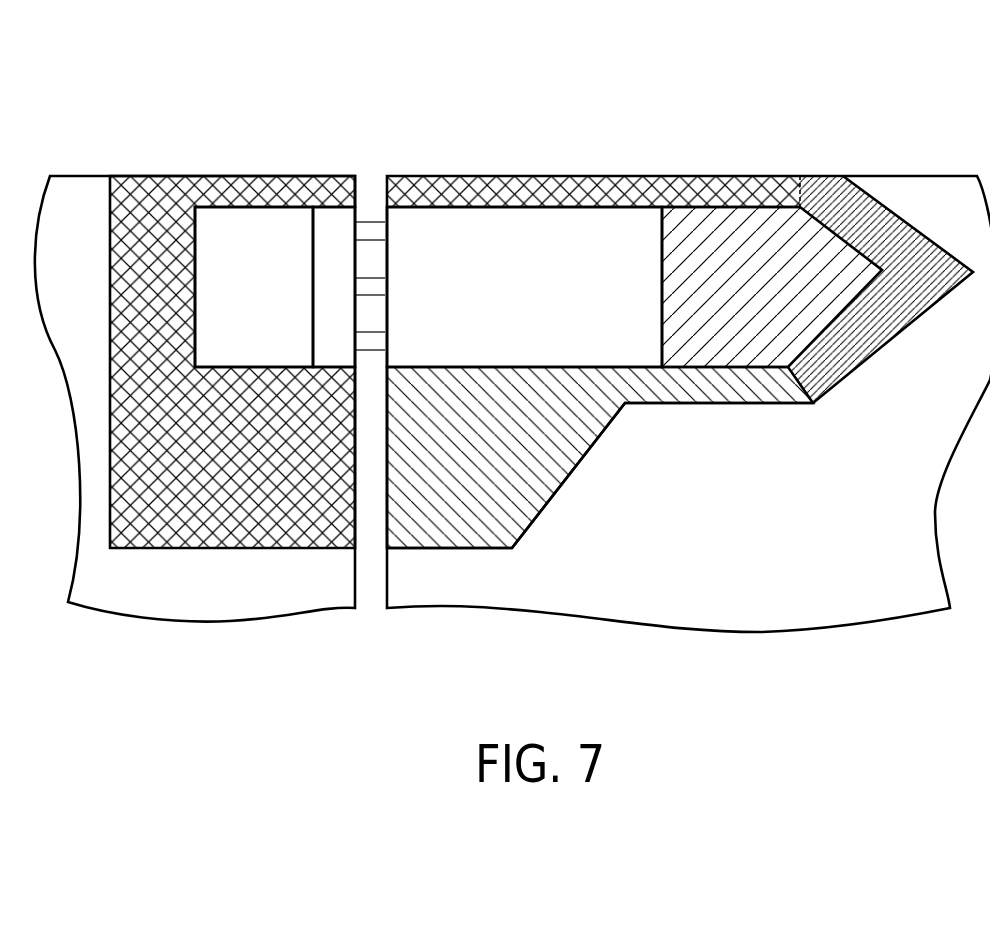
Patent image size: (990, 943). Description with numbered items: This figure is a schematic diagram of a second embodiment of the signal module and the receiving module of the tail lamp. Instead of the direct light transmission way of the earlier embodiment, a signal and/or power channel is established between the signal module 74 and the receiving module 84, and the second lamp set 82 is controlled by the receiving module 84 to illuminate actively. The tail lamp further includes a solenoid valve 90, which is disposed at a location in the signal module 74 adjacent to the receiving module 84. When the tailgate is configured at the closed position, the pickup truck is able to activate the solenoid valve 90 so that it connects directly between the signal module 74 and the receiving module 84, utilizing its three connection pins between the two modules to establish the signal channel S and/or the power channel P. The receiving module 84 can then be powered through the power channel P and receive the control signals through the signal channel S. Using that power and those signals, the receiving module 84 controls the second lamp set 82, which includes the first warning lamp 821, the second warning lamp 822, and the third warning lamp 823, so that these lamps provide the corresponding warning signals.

The signal module 74 is at (241, 301).
The solenoid valve 90 is at (317, 301).
The receiving module 84 is at (507, 301).
The second lamp set 82 is at (688, 372).
The first warning lamp 821 is at (688, 192).
The second warning lamp 822 is at (762, 220).
The third warning lamp 823 is at (463, 510).
The power channel P is at (368, 232).
The signal channel S is at (372, 283).